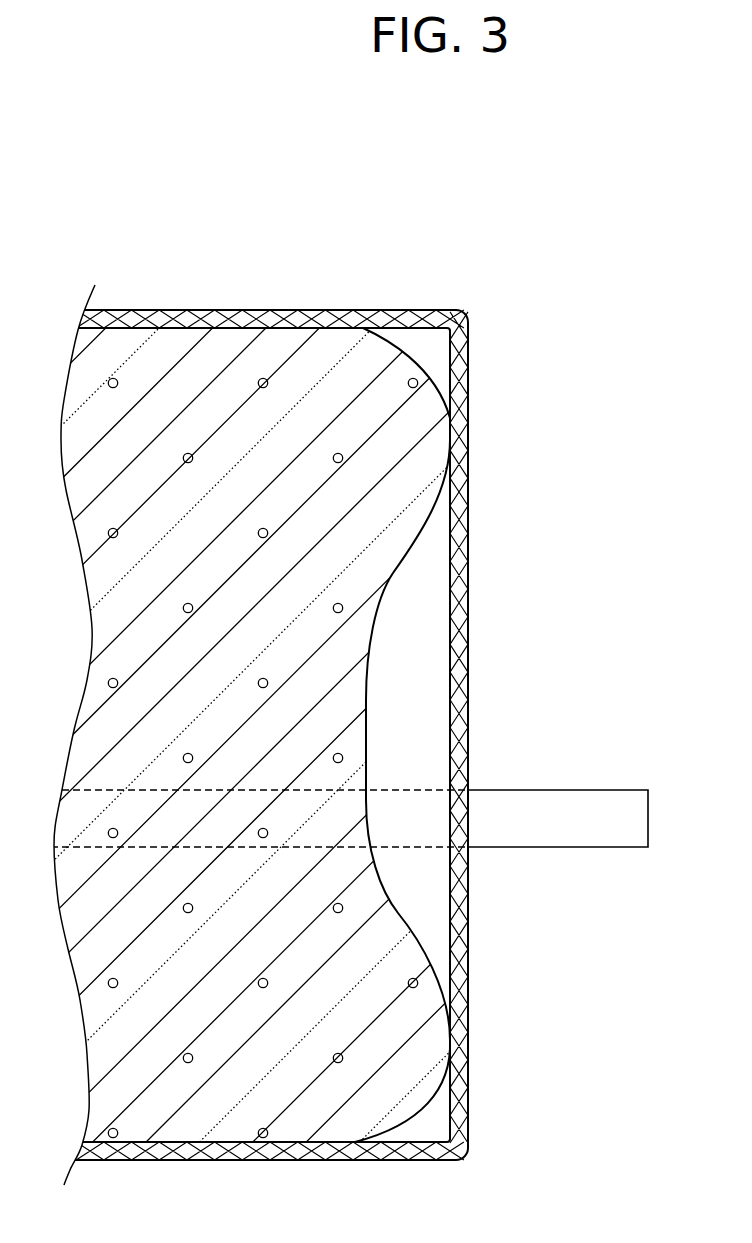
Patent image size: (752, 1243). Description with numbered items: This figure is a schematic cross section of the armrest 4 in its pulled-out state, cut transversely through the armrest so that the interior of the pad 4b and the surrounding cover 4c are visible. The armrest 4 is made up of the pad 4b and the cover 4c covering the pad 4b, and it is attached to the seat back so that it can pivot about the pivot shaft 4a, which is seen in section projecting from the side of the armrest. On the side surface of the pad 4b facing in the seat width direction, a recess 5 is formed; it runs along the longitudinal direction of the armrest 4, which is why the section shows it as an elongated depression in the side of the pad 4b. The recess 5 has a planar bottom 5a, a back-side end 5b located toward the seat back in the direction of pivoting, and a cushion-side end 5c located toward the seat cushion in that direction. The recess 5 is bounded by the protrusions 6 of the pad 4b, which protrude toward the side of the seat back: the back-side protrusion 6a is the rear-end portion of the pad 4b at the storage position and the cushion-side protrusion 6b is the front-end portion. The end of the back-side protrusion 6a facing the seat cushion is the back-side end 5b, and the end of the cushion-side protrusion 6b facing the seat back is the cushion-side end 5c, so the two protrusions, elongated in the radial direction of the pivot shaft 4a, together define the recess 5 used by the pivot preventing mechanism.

The armrest 4 is at (524, 214).
The pivot shaft 4a is at (615, 806).
The pad 4b is at (246, 369).
The cover 4c is at (383, 318).
The recess 5 is at (467, 740).
The planar bottom 5a is at (370, 717).
The back-side end 5b is at (418, 522).
The cushion-side end 5c is at (422, 955).
The protrusions 6 is at (472, 735).
The back-side protrusion 6a is at (422, 412).
The cushion-side protrusion 6b is at (420, 1058).